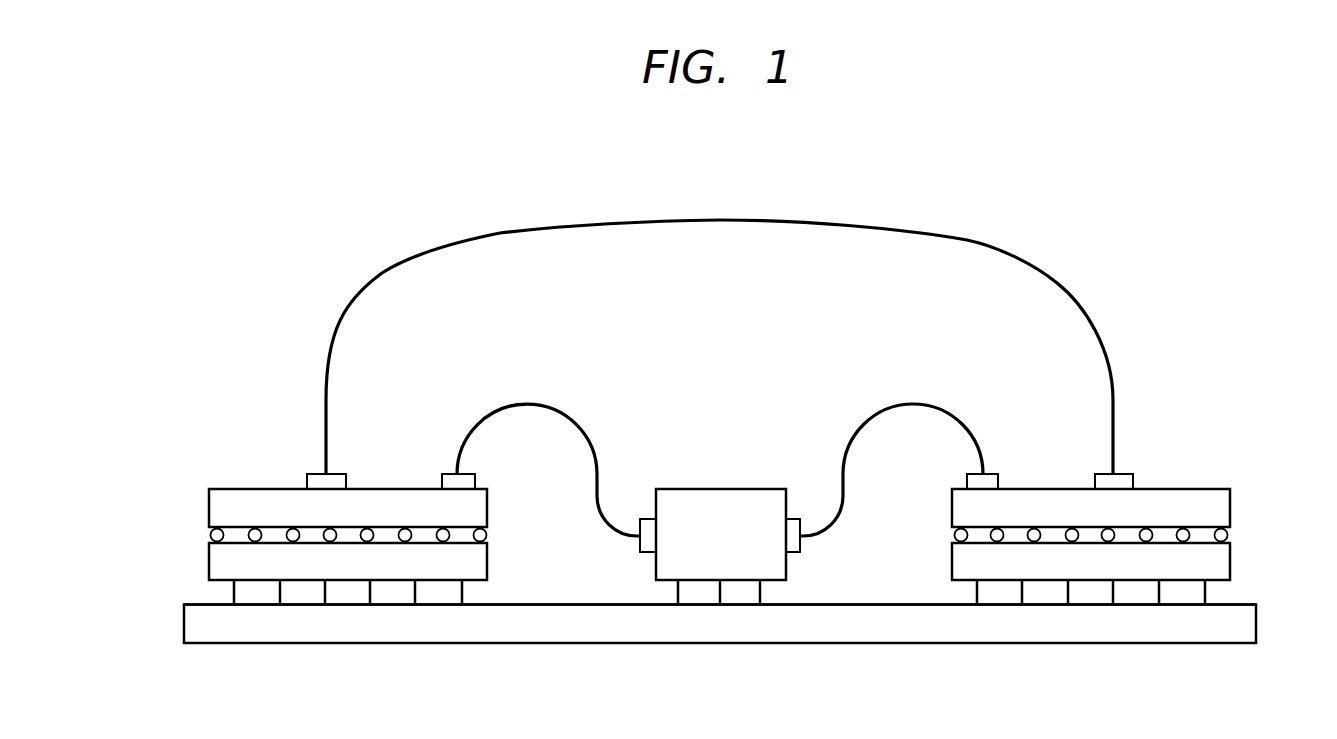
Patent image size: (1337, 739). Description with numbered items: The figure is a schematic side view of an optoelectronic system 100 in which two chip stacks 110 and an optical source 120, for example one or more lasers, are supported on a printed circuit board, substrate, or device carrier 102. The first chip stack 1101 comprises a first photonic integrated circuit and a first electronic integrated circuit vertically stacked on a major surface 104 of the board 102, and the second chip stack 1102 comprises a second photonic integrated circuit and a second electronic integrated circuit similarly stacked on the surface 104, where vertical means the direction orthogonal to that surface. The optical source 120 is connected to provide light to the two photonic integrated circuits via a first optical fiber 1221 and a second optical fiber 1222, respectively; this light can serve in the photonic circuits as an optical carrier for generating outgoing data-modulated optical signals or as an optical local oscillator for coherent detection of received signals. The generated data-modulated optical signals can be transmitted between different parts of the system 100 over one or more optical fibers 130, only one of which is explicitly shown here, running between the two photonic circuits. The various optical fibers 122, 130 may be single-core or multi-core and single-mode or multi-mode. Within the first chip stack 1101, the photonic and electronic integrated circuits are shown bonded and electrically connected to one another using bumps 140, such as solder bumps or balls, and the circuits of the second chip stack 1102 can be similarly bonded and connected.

The optoelectronic system 100 is at (728, 136).
The printed circuit board 102 is at (675, 637).
The major surface 104 is at (551, 600).
The chip stack 110 is at (719, 497).
The first chip stack 1101 is at (192, 456).
The second chip stack 1102 is at (1250, 456).
The optical source 120 is at (709, 489).
The optical fiber 122 is at (721, 446).
The first optical fiber 1221 is at (530, 403).
The second optical fiber 1222 is at (915, 403).
The optical fiber 130 is at (730, 221).
The bumps 140 is at (190, 534).